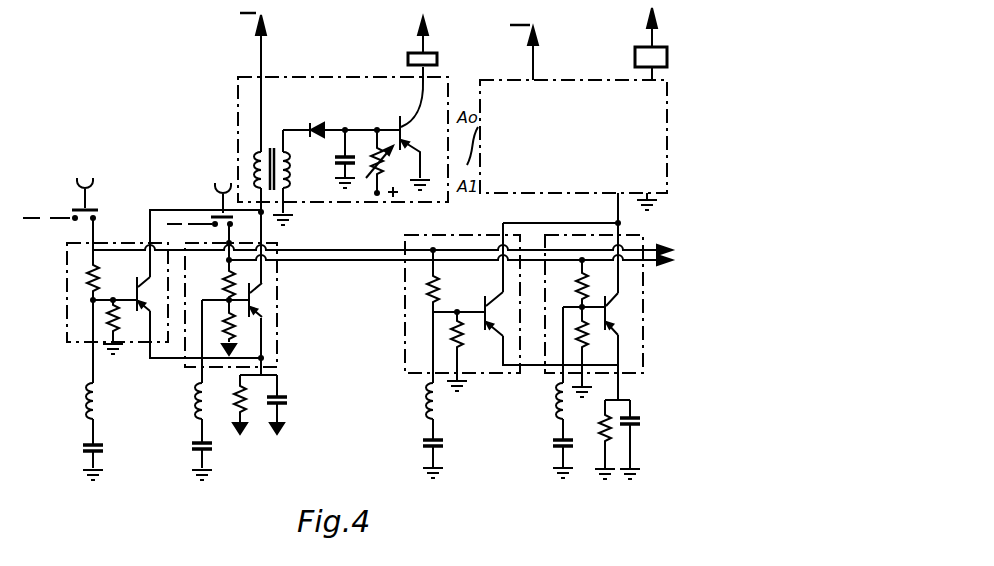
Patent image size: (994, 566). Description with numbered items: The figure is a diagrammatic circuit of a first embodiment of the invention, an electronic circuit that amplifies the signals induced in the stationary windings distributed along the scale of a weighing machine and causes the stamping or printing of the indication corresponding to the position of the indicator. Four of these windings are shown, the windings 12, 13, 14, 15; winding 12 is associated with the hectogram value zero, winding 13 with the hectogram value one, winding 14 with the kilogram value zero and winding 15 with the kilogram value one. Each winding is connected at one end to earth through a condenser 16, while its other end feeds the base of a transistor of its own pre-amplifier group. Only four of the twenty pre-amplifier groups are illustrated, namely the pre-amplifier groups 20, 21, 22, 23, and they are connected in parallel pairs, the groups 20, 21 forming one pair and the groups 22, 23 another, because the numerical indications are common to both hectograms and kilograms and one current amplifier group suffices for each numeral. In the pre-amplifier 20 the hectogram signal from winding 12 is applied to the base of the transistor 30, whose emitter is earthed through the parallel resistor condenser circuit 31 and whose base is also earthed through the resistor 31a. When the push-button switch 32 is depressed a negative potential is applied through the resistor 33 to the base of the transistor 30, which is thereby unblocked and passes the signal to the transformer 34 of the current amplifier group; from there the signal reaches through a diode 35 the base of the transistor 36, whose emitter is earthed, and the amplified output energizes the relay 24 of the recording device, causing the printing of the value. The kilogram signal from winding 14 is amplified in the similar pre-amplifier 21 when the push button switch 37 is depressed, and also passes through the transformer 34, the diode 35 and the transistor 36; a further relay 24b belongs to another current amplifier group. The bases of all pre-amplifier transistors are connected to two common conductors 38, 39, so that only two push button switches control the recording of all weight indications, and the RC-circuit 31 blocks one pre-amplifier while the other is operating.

The winding 12 is at (101, 405).
The winding 13 is at (425, 407).
The winding 14 is at (193, 413).
The winding 15 is at (558, 404).
The condenser 16 is at (102, 455).
The pre-amplifier 20 is at (67, 290).
The pre-amplifier 21 is at (280, 300).
The pre-amplifier group 22 is at (402, 335).
The pre-amplifier group 23 is at (644, 367).
The relay 24 is at (430, 50).
The relay 24b is at (643, 48).
The transistor 30 is at (154, 296).
The parallel resistor condenser circuit 31 is at (290, 386).
The resistor 31a is at (123, 330).
The push-button switch 32 is at (95, 200).
The resistor 33 is at (96, 270).
The transformer 34 is at (274, 146).
The diode 35 is at (318, 126).
The transistor 36 is at (412, 128).
The push button switch 37 is at (377, 143).
The common conductor 38 is at (330, 263).
The common conductor 39 is at (372, 252).